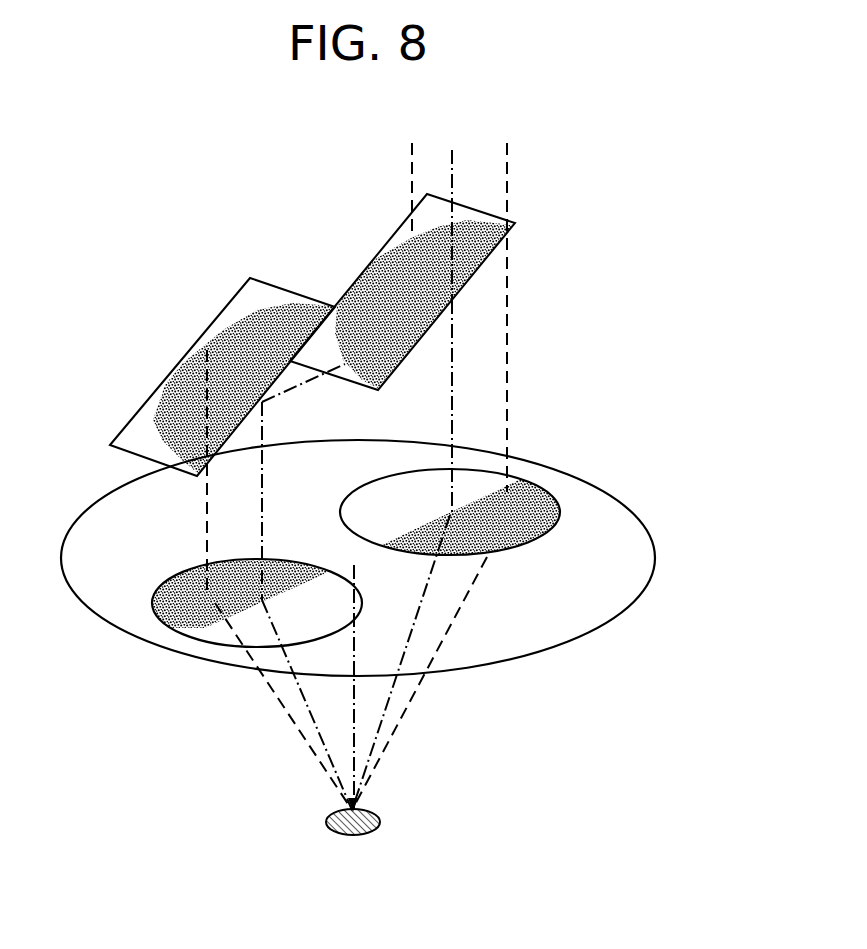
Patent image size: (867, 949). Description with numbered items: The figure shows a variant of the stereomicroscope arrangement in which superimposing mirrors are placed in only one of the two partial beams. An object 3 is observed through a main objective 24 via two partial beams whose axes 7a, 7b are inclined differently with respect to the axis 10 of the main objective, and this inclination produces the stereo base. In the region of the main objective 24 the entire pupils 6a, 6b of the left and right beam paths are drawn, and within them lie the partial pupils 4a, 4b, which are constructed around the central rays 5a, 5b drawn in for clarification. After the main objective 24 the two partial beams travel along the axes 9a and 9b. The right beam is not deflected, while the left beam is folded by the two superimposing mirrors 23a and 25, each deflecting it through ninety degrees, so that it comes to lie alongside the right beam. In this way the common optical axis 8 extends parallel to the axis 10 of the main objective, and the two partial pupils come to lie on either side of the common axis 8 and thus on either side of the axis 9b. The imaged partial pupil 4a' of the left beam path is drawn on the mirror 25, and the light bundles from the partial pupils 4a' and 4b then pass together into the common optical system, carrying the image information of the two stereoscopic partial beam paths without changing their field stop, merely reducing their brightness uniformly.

The object 3 is at (367, 807).
The partial pupil 4a is at (219, 589).
The imaged partial pupil 4a' is at (219, 369).
The partial pupil 4b is at (530, 540).
The central ray 5a is at (412, 165).
The central ray 5b is at (507, 353).
The entire pupil 6a is at (203, 643).
The entire pupil 6b is at (523, 480).
The axis of partial beam 7a is at (305, 708).
The axis of partial beam 7b is at (380, 743).
The common optical axis 8 is at (453, 170).
The axis 9a is at (262, 530).
The axis 9b is at (452, 343).
The axis of the main objective 10 is at (357, 571).
The superimposing mirror 23a is at (170, 372).
The main objective 24 is at (640, 510).
The superimposing mirror 25 is at (405, 220).